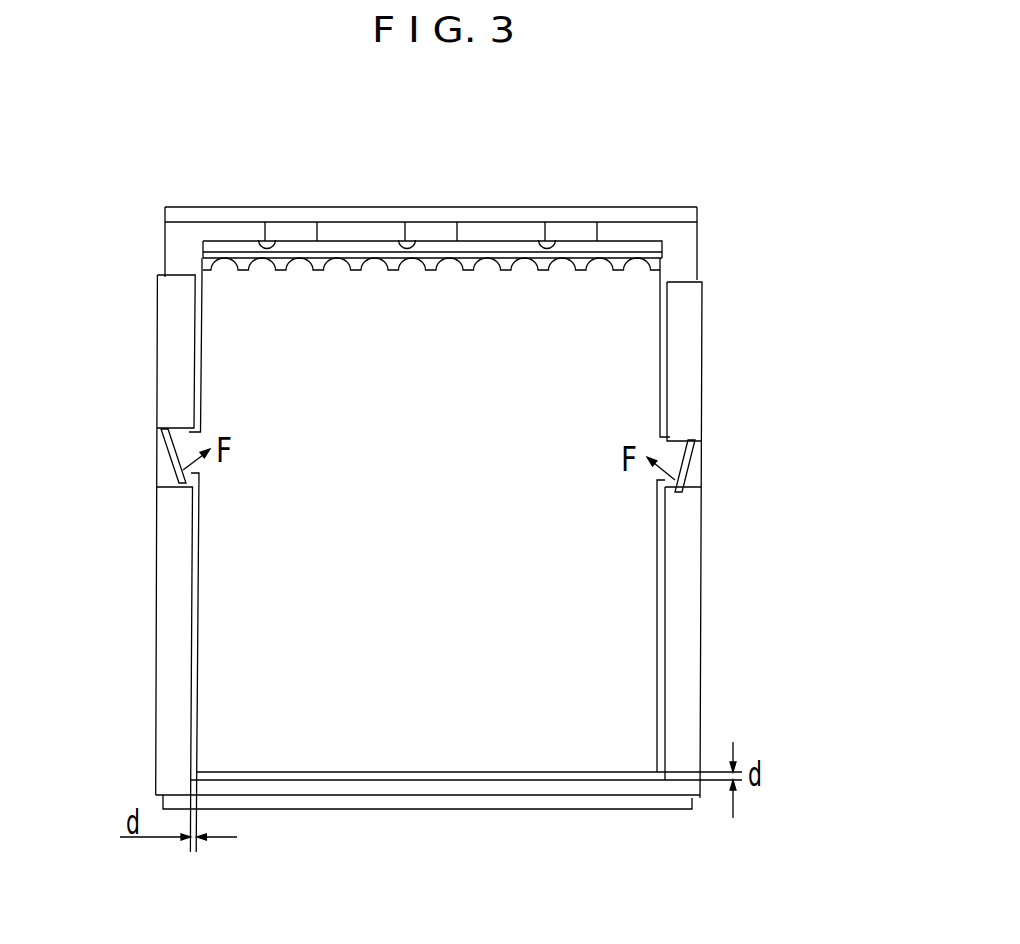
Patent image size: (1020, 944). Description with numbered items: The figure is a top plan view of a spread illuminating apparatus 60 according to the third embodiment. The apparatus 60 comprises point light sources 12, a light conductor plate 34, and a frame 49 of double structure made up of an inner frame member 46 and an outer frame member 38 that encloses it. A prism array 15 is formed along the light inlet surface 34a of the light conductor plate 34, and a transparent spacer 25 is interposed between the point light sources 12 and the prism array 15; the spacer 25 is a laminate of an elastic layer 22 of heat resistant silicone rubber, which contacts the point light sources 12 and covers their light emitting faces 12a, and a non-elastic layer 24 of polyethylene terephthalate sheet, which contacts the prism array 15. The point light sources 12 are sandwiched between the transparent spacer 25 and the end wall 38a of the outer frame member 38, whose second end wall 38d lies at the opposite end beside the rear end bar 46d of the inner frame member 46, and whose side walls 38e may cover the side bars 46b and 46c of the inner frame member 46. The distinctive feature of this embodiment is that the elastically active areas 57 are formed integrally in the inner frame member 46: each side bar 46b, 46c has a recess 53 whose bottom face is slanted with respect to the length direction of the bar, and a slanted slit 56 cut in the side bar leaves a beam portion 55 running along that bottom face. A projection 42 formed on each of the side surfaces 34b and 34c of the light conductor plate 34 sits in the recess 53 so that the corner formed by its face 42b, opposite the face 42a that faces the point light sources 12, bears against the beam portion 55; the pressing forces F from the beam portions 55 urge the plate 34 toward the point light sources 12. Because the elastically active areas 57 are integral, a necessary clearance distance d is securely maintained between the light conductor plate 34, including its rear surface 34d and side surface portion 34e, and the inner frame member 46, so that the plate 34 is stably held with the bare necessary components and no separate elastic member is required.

The point light sources 12 is at (302, 230).
The lead terminal of LED 12a is at (259, 240).
The prism array 15 is at (214, 265).
The elastic layer 22 is at (700, 223).
The non-elastic layer 24 is at (657, 250).
The transparent spacer 25 is at (805, 180).
The light conductor plate 34 is at (632, 702).
The light inlet surface 34a is at (233, 271).
The side surface 34b is at (200, 700).
The side surface 34c is at (654, 628).
The bottom portion of frame 34d is at (468, 763).
The right side lower portion of frame 34e is at (657, 740).
The outer frame member 38 is at (698, 270).
The end wall 38a is at (642, 218).
The second end wall 38d is at (636, 805).
The side wall of upper chassis 38e is at (180, 237).
The projection 42 is at (160, 437).
The face 42a is at (187, 428).
The face 42b is at (183, 490).
The inner frame member 46 is at (693, 338).
The side bar 46b is at (172, 655).
The side bar 46c is at (683, 578).
The rear end bar 46d is at (553, 790).
The chassis assembly 49 is at (845, 267).
The recess 53 is at (168, 462).
The beam portion 55 is at (172, 473).
The slit 56 is at (176, 487).
The elastically active area 57 is at (75, 452).
The spread illuminating apparatus 60 is at (385, 832).